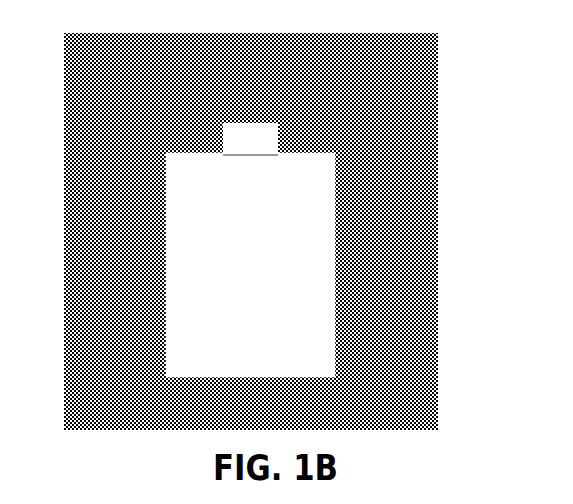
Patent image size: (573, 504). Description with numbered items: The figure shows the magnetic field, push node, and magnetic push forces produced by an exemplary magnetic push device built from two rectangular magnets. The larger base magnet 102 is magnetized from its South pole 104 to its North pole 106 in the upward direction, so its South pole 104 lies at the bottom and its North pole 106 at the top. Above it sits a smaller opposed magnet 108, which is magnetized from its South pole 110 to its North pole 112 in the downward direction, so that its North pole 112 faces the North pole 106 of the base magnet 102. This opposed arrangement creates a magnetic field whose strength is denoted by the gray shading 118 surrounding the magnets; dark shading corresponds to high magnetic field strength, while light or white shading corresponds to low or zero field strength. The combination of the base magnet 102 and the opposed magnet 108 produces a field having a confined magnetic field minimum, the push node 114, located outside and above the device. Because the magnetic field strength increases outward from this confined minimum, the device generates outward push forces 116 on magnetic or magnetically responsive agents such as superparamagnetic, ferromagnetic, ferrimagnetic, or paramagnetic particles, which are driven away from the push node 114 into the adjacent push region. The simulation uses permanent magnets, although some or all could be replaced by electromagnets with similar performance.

The base magnet 102 is at (311, 263).
The South pole of base magnet 104 is at (250, 343).
The North pole of base magnet 106 is at (250, 170).
The smaller opposed magnet 108 is at (227, 135).
The South pole of opposed magnet 110 is at (227, 123).
The North pole of opposed magnet 112 is at (300, 150).
The push node 114 is at (300, 78).
The outward push forces 116 is at (300, 45).
The gray shading 118 is at (380, 355).